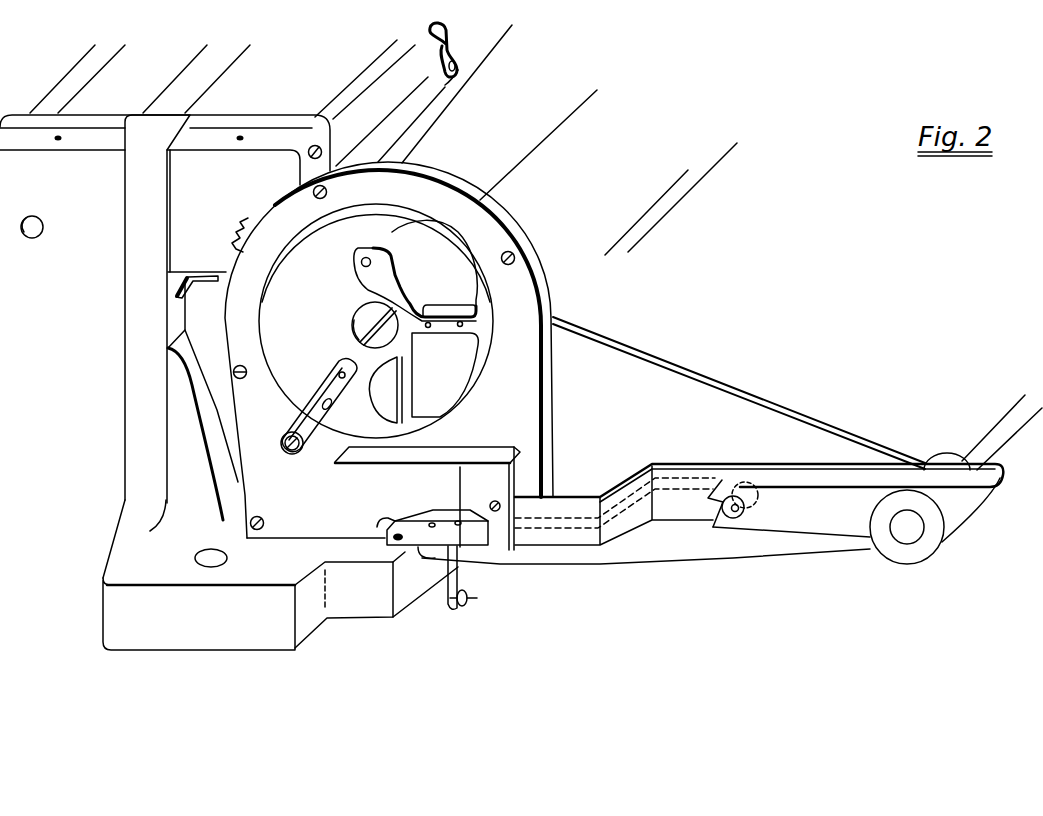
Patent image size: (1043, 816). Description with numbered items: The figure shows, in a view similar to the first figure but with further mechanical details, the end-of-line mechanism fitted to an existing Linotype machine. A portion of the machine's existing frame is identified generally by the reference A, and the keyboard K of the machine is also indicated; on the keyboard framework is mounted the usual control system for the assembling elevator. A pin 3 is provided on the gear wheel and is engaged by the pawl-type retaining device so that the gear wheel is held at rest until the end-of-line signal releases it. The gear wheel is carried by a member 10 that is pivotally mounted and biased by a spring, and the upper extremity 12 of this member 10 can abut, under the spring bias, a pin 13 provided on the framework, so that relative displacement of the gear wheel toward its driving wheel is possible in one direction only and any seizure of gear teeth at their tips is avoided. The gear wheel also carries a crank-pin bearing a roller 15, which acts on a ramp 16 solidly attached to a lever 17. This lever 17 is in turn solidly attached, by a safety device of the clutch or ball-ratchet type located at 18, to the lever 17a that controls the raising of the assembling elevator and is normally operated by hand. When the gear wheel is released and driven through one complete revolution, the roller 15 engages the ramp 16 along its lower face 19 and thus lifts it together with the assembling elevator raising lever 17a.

The frame A is at (143, 325).
The keyboard K is at (816, 303).
The pin 3 is at (455, 304).
The member 10 is at (388, 394).
The upper extremity 12 is at (384, 268).
The pin 13 is at (370, 257).
The roller 15 is at (282, 443).
The ramp 16 is at (477, 446).
The lever 17 is at (636, 467).
The assembling elevator raising lever 17a is at (819, 516).
The safety device connection 18 is at (733, 519).
The lower face 19 is at (520, 458).